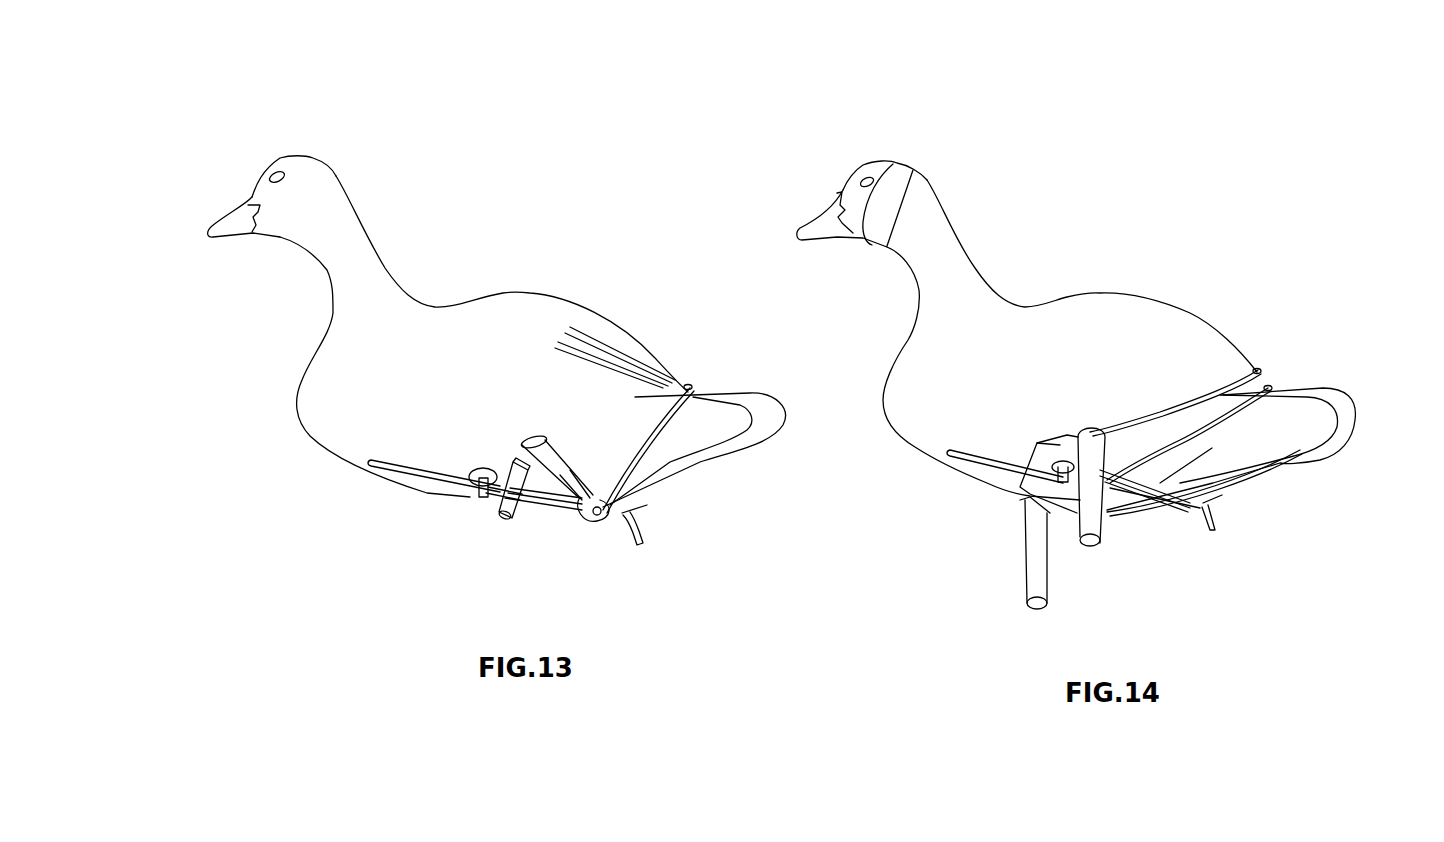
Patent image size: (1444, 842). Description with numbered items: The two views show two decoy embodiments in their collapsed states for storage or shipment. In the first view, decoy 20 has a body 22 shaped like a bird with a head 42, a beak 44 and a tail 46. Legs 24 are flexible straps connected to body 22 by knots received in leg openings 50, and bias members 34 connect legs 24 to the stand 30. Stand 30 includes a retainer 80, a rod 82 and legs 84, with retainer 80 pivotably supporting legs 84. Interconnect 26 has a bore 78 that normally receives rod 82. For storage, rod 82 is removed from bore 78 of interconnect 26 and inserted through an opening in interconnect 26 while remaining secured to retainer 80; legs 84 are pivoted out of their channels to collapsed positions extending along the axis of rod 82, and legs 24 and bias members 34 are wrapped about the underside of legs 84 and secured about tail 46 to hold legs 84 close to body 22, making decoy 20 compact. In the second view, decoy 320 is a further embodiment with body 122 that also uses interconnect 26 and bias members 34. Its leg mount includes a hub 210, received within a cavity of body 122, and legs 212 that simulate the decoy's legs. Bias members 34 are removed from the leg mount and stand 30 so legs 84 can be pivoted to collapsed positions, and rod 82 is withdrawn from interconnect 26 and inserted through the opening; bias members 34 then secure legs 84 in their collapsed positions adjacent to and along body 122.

In FIG. 13, the decoy 20 is at (287, 104).
In FIG. 13, the body 22 is at (503, 293).
In FIG. 13, the head 42 is at (333, 173).
In FIG. 14, the head 42 is at (910, 165).
In FIG. 13, the beak 44 is at (212, 225).
In FIG. 14, the beak 44 is at (812, 222).
In FIG. 13, the tail 46 is at (763, 408).
In FIG. 14, the tail 46 is at (1338, 388).
In FIG. 13, the interconnect 26 is at (480, 470).
In FIG. 14, the interconnect 26 is at (1053, 462).
In FIG. 13, the rod 82 is at (435, 473).
In FIG. 14, the rod 82 is at (978, 455).
In FIG. 13, the leg openings 50 is at (540, 437).
In FIG. 13, the legs 24 is at (552, 463).
In FIG. 13, the bias members 34 is at (650, 443).
In FIG. 14, the bias members 34 is at (1233, 373).
In FIG. 13, the retainer 80 is at (483, 500).
In FIG. 14, the retainer 80 is at (1113, 430).
In FIG. 13, the bore 78 is at (506, 497).
In FIG. 13, the legs 84 is at (553, 510).
In FIG. 14, the legs 84 is at (1185, 513).
In FIG. 13, the stand 30 is at (650, 552).
In FIG. 14, the stand 30 is at (1228, 540).
In FIG. 14, the decoy 320 is at (1158, 231).
In FIG. 14, the body 122 is at (1188, 313).
In FIG. 14, the hub 210 is at (1035, 457).
In FIG. 14, the legs 212 is at (1023, 595).